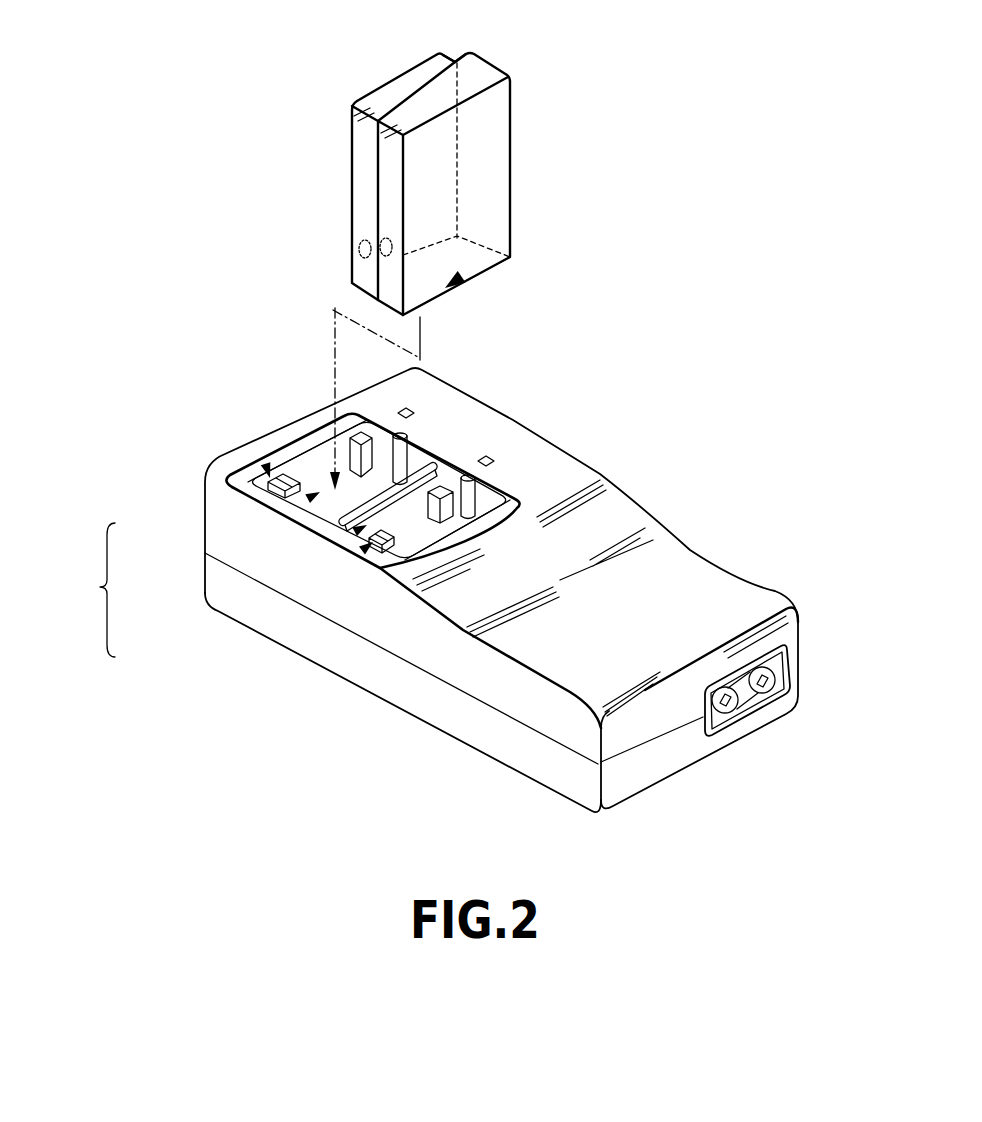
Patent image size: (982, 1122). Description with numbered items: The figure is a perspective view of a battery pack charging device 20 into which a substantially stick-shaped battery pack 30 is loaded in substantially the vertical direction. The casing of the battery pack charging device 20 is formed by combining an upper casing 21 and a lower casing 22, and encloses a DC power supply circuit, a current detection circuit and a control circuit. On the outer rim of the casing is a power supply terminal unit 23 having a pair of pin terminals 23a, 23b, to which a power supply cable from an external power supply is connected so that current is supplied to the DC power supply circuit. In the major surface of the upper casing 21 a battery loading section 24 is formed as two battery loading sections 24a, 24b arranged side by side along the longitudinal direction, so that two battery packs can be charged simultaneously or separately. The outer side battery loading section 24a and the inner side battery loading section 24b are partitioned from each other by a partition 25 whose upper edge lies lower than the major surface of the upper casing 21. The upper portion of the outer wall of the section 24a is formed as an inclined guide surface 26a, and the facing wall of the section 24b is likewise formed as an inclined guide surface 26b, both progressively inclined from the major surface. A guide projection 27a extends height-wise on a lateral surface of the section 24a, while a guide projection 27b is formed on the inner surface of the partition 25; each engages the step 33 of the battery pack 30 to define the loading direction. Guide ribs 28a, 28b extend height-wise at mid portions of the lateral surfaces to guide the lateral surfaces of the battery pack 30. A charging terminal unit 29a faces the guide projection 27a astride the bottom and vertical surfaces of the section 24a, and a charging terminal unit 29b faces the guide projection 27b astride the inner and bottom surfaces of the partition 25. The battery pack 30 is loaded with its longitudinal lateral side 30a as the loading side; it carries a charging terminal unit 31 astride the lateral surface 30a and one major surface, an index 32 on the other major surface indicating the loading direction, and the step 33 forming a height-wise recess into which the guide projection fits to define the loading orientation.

The battery pack charging device 20 is at (778, 486).
The upper casing 21 is at (405, 627).
The lower casing 22 is at (427, 702).
The power supply terminal unit 23 is at (782, 659).
The pin terminal 23a is at (732, 706).
The pin terminal 23b is at (770, 682).
The battery loading section 24 is at (87, 590).
The outer side battery loading section 24a is at (307, 499).
The inner side battery loading section 24b is at (354, 531).
The partition 25 is at (402, 490).
The inclined guide surface 26a is at (292, 452).
The inclined guide surface 26b is at (500, 486).
The guide projection 27a is at (361, 434).
The guide projection 27b is at (442, 488).
The guide rib 28a is at (406, 440).
The guide rib 28b is at (472, 480).
The charging terminal unit 29a is at (266, 462).
The charging terminal unit 29b is at (361, 551).
The battery pack 30 is at (553, 165).
The longitudinal lateral side 30a is at (447, 298).
The charging terminal unit 31 is at (353, 262).
The index 32 is at (465, 275).
The step 33 is at (457, 62).